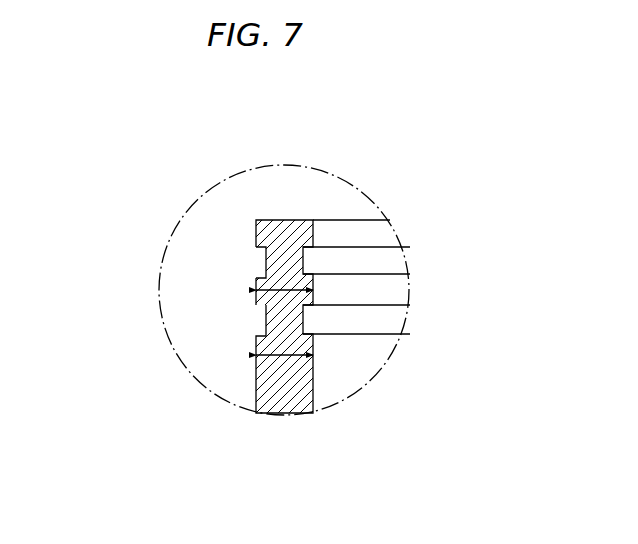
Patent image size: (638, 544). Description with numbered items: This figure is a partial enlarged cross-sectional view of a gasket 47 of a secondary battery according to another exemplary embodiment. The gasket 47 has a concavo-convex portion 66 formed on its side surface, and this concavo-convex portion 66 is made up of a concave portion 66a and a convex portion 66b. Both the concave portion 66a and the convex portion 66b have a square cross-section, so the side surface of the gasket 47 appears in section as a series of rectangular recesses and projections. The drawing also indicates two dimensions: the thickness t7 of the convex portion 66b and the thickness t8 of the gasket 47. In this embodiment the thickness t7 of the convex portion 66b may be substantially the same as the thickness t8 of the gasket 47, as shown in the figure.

The concavo-convex portion 66 is at (90, 263).
The concave portion 66a is at (266, 262).
The convex portion 66b is at (256, 290).
The gasket 47 is at (263, 385).
The thickness of the convex portion t7 is at (305, 274).
The thickness of the gasket t8 is at (313, 336).